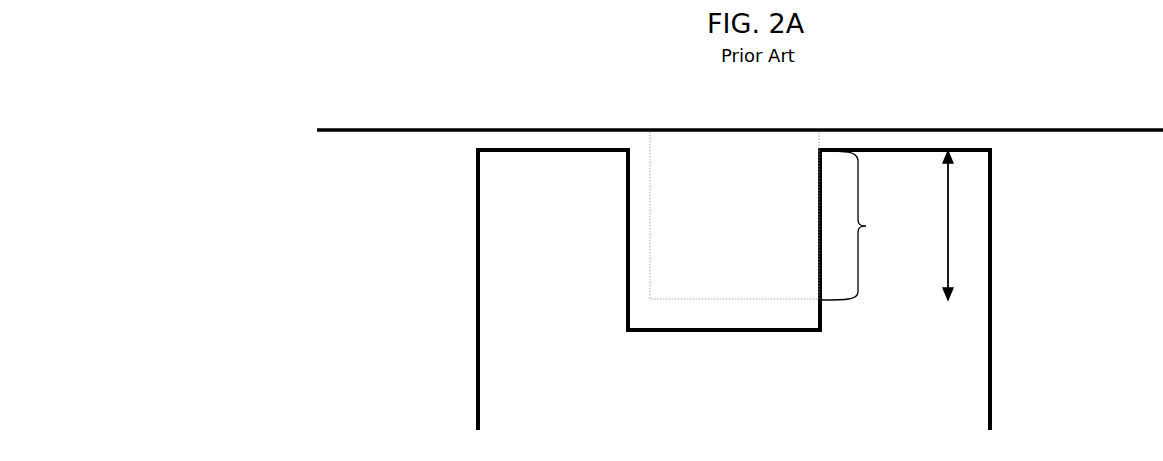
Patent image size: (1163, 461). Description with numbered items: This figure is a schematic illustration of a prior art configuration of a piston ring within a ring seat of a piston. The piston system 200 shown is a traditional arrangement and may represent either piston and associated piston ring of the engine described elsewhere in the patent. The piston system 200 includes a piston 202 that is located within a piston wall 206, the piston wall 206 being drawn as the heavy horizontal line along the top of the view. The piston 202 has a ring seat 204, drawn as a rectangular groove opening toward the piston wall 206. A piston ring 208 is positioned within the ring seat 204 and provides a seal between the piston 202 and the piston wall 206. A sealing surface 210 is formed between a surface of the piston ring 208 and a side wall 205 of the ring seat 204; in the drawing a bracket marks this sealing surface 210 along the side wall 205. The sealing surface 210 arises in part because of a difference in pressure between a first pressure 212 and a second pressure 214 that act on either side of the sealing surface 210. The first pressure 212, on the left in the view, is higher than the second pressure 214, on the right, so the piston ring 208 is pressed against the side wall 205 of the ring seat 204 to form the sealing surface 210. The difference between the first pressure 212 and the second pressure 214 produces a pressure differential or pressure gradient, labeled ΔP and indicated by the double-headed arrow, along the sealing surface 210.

The piston system 200 is at (415, 277).
The piston 202 is at (975, 405).
The ring seat 204 is at (706, 312).
The side wall 205 is at (818, 315).
The piston wall 206 is at (1050, 130).
The piston ring 208 is at (727, 150).
The sealing surface 210 is at (866, 226).
The first pressure 212 is at (427, 176).
The second pressure 214 is at (1057, 176).